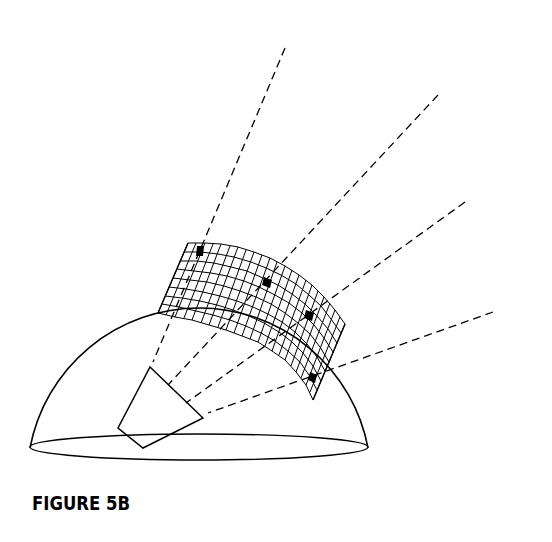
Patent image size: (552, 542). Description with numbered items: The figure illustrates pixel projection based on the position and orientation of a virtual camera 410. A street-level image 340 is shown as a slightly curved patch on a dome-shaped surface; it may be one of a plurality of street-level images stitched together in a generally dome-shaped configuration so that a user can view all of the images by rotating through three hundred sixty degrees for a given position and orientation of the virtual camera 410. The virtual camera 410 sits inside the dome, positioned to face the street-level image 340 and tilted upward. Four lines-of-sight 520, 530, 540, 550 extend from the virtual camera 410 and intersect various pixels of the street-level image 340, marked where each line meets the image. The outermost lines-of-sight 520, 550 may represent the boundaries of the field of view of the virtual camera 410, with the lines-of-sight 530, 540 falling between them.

The street-level image 340 is at (350, 323).
The virtual camera 410 is at (166, 411).
The line-of-sight 520 is at (254, 122).
The line-of-sight 530 is at (355, 186).
The line-of-sight 540 is at (394, 254).
The line-of-sight 550 is at (378, 355).